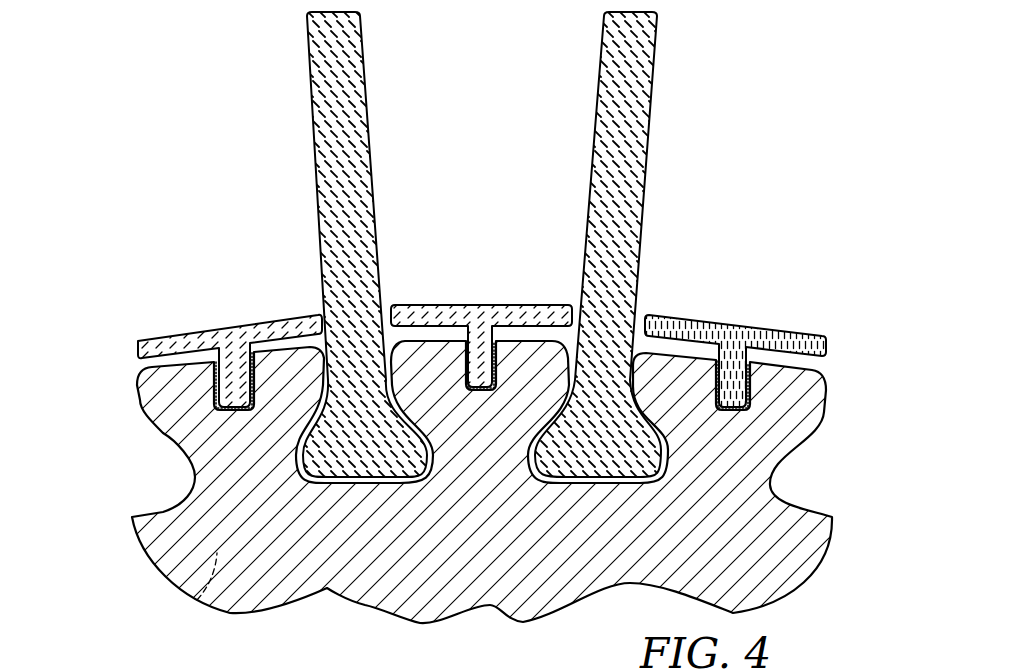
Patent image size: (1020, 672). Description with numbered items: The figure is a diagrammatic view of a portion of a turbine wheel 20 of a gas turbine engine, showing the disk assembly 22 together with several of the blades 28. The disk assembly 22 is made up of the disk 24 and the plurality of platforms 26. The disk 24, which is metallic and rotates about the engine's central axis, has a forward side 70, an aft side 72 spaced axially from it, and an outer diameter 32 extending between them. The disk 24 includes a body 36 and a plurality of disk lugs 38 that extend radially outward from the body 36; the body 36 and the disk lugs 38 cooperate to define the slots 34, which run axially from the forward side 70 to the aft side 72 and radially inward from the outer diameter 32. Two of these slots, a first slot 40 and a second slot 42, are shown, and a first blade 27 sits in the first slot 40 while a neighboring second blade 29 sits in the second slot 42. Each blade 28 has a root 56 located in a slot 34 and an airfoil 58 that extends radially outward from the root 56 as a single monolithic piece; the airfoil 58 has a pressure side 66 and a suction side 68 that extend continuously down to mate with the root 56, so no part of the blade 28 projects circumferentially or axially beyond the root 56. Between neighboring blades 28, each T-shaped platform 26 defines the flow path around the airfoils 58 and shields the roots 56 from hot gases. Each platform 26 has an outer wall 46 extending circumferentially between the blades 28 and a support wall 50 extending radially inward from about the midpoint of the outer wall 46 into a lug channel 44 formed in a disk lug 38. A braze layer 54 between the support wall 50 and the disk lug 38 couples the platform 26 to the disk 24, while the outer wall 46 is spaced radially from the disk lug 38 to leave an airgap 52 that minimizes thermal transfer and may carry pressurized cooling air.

The turbine wheel 20 is at (140, 188).
The disk assembly 22 is at (162, 310).
The disk 24 is at (143, 512).
The platform 26 is at (474, 306).
The first blade 27 is at (368, 117).
The blade 28 is at (598, 78).
The second blade 29 is at (653, 87).
The outer diameter 32 is at (670, 352).
The slot 34 is at (300, 466).
The body 36 is at (753, 545).
The disk lug 38 is at (827, 398).
The first slot 40 is at (427, 460).
The second slot 42 is at (532, 463).
The lug channel 44 is at (281, 327).
The outer wall 46 is at (417, 305).
The support wall 50 is at (487, 344).
The airgap 52 is at (424, 330).
The braze layer 54 is at (500, 366).
The root 56 is at (618, 446).
The airfoil 58 is at (643, 222).
The pressure side 66 is at (648, 154).
The suction side 68 is at (593, 156).
The forward side 70 is at (173, 578).
The aft side 72 is at (197, 600).